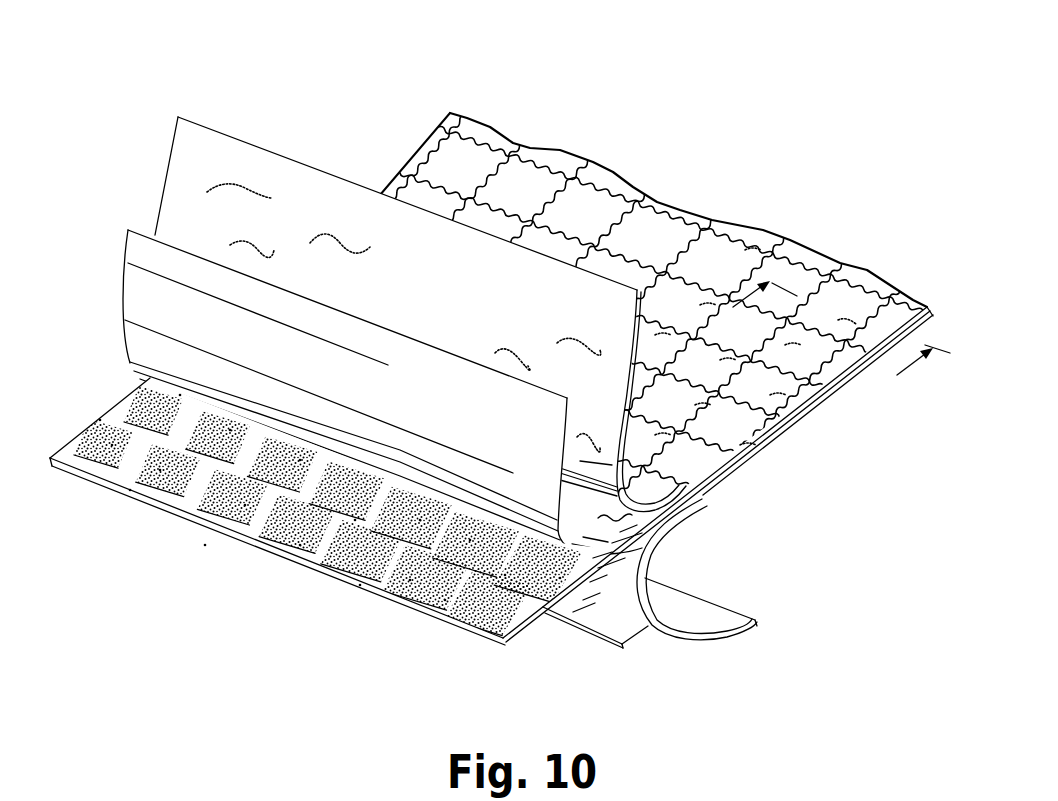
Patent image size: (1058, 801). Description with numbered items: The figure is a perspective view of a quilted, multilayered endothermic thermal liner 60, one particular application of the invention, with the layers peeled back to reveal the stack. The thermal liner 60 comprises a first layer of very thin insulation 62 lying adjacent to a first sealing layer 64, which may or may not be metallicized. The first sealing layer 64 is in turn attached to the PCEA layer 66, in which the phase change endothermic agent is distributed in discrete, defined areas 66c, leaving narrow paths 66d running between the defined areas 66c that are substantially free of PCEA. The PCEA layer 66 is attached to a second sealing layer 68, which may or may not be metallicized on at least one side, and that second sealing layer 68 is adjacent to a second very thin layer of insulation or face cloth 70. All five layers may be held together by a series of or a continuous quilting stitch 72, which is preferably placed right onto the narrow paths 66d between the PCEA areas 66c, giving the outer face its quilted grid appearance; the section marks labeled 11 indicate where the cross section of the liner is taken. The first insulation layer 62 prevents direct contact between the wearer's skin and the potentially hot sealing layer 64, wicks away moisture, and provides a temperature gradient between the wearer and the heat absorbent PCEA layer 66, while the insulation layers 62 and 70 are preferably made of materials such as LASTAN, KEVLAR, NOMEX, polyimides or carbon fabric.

The thermal liner 60 is at (286, 98).
The first layer of very thin insulation 62 is at (323, 190).
The first sealing layer 64 is at (130, 247).
The PCEA layer 66 is at (120, 506).
The defined areas 66c is at (230, 508).
The narrow paths 66d is at (112, 420).
The second sealing layer 68 is at (580, 617).
The second very thin layer of insulation or face cloth 70 is at (705, 640).
The quilting stitch 72 is at (689, 468).
The section line of FIG. 11 is at (825, 352).